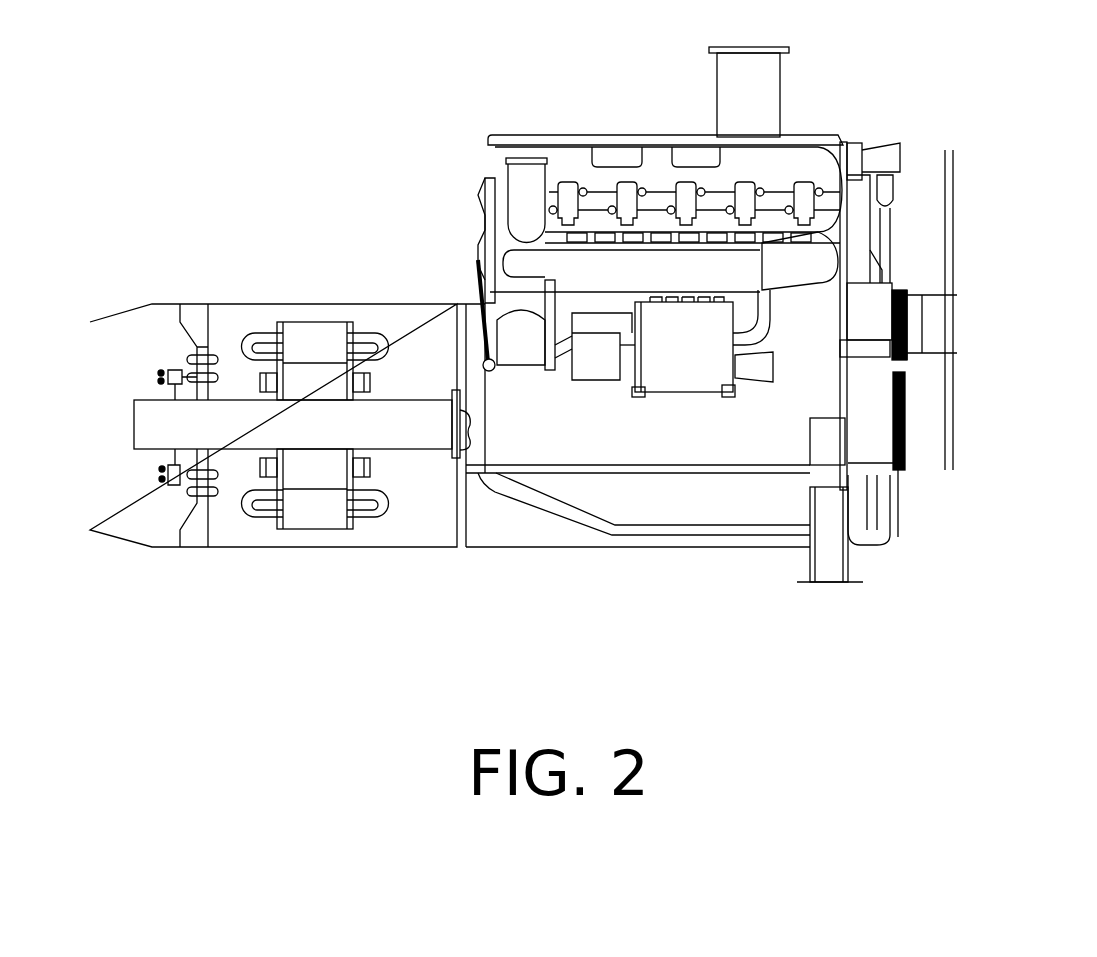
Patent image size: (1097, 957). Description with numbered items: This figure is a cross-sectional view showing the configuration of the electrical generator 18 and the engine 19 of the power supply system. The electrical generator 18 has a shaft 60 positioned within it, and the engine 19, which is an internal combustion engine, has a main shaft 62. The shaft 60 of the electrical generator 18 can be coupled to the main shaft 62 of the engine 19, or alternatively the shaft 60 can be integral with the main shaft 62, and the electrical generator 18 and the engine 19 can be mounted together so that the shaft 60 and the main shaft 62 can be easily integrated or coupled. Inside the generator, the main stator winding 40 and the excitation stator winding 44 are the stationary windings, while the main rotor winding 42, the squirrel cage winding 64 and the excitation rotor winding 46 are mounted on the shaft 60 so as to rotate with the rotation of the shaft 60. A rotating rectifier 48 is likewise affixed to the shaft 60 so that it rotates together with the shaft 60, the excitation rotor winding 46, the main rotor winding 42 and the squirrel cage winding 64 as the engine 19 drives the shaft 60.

The electrical generator 18 is at (272, 238).
The engine 19 is at (853, 85).
The main stator winding 40 is at (355, 335).
The main rotor winding 42 is at (370, 383).
The excitation stator winding 44 is at (190, 355).
The excitation rotor winding 46 is at (187, 376).
The rotating rectifier 48 is at (160, 478).
The shaft 60 is at (145, 425).
The main shaft 62 is at (470, 428).
The squirrel cage winding 64 is at (297, 380).